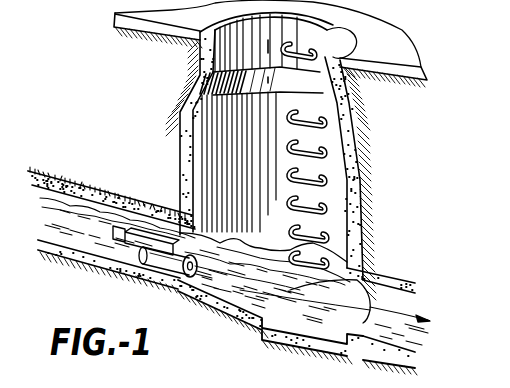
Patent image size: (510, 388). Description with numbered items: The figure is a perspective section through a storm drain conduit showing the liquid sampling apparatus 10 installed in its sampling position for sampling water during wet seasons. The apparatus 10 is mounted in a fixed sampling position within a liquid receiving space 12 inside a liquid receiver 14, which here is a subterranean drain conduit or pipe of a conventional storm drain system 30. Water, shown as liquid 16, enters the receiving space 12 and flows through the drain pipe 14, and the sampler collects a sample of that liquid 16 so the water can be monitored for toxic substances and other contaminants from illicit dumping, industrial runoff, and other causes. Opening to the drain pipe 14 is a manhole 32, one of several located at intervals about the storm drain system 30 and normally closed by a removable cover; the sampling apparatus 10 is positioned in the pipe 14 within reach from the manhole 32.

The liquid sampling apparatus 10 is at (167, 278).
The liquid receiving space 12 is at (88, 245).
The liquid receiver 14 is at (87, 192).
The liquid 16 is at (290, 318).
The storm drain system 30 is at (357, 128).
The manhole 32 is at (308, 35).